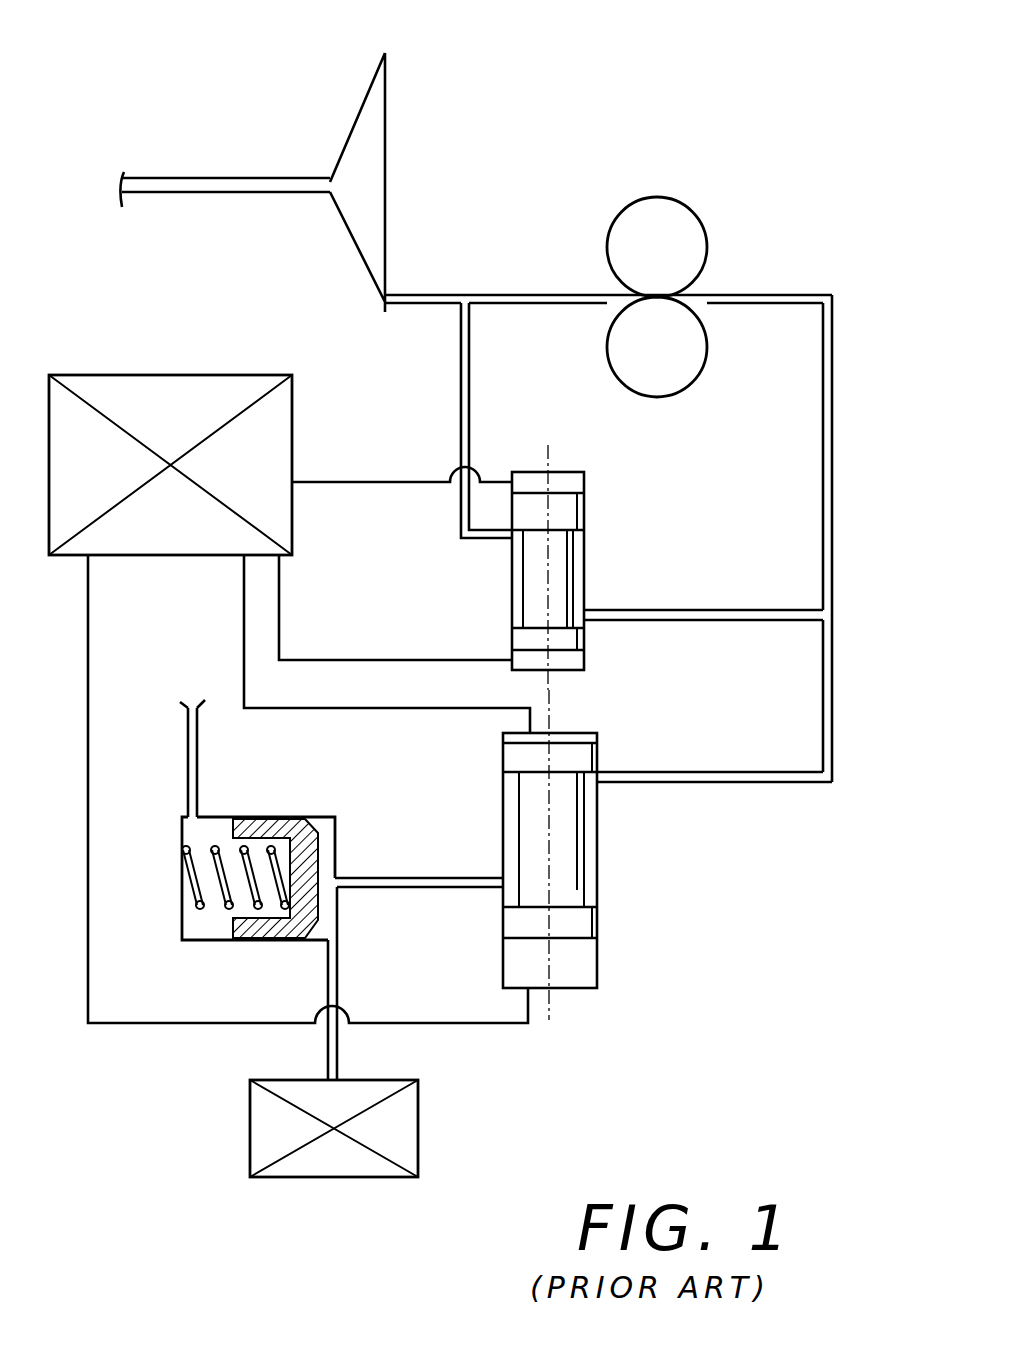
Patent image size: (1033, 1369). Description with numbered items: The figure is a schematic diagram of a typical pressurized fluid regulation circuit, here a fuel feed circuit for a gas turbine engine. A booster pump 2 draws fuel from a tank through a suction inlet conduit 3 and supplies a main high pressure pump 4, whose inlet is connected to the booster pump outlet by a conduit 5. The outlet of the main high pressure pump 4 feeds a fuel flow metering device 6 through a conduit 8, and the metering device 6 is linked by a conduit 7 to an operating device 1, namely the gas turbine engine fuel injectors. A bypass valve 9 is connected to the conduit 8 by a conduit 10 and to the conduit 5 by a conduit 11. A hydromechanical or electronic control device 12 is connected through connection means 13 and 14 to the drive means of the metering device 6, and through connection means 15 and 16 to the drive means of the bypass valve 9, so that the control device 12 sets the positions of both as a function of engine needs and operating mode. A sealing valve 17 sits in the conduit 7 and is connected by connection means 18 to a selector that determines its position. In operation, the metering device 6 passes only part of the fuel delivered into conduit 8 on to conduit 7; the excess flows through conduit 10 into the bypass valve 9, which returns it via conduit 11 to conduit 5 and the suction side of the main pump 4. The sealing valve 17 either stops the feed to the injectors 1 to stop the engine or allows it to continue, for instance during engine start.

The operating device 1 is at (407, 1142).
The booster pump 2 is at (388, 102).
The suction inlet conduit 3 is at (178, 185).
The main high pressure pump 4 is at (672, 218).
The conduit 5 is at (450, 292).
The fuel flow metering device 6 is at (600, 965).
The conduit 7 is at (362, 885).
The conduit 8 is at (828, 590).
The bypass valve 9 is at (587, 548).
The conduit 10 is at (728, 610).
The conduit 11 is at (466, 383).
The hydromechanical or electronic control device 12 is at (110, 380).
The connection means 13 is at (410, 712).
The connection means 14 is at (165, 1026).
The connection means 15 is at (368, 480).
The connection means 16 is at (392, 660).
The sealing valve 17 is at (159, 858).
The connection means 18 is at (190, 750).